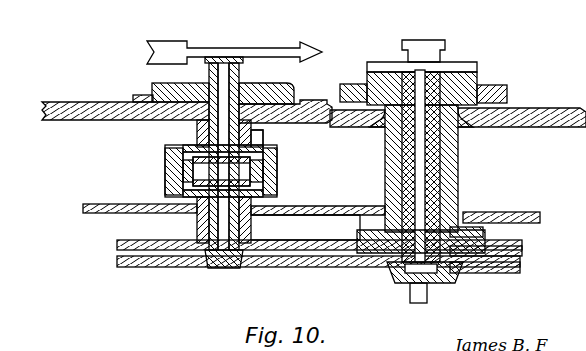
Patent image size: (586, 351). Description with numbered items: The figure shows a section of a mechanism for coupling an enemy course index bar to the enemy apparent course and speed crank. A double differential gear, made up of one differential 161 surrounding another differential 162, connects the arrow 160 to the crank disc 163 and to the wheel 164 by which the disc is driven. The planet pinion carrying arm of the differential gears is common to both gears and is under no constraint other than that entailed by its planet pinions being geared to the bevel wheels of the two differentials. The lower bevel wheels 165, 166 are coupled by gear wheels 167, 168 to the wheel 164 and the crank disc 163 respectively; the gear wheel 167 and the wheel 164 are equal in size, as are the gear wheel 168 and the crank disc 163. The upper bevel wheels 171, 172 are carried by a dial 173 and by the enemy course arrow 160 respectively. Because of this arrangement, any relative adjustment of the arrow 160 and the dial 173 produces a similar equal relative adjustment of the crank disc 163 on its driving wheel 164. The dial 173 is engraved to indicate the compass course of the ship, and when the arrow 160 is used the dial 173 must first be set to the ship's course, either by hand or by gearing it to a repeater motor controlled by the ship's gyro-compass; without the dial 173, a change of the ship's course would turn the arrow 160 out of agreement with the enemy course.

The arrow 160 is at (204, 55).
The differential 161 is at (165, 161).
The differential 162 is at (270, 190).
The crank disc 163 is at (500, 275).
The wheel 164 is at (503, 252).
The lower bevel wheel 165 is at (262, 218).
The lower bevel wheel 166 is at (272, 206).
The gear wheel 167 is at (117, 244).
The gear wheel 168 is at (117, 262).
The upper bevel wheel 171 is at (257, 145).
The upper bevel wheel 172 is at (266, 153).
The dial 173 is at (160, 84).